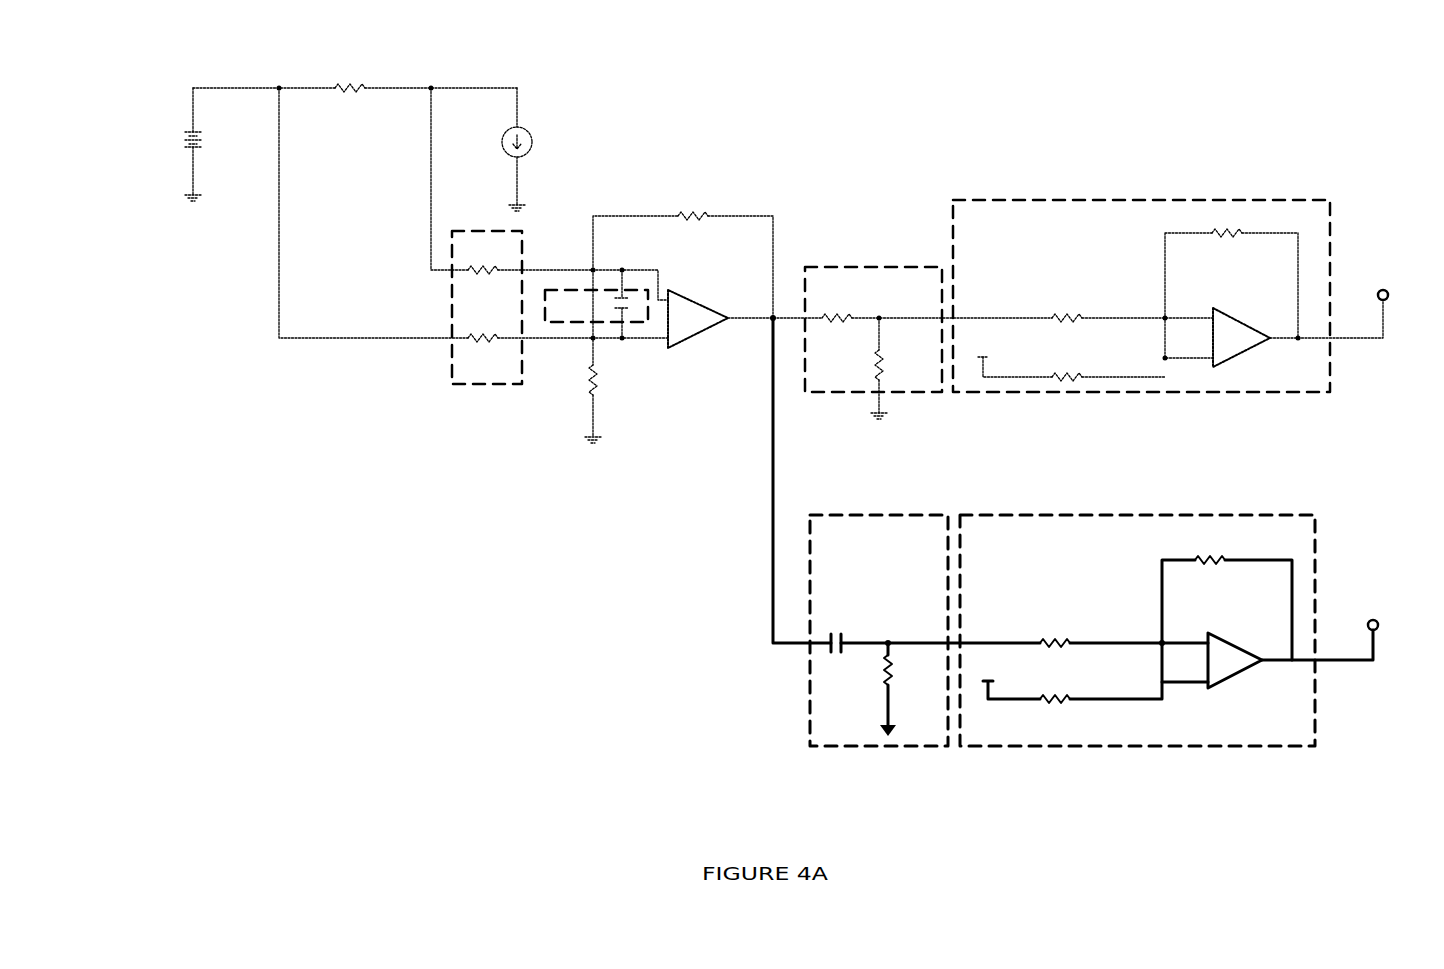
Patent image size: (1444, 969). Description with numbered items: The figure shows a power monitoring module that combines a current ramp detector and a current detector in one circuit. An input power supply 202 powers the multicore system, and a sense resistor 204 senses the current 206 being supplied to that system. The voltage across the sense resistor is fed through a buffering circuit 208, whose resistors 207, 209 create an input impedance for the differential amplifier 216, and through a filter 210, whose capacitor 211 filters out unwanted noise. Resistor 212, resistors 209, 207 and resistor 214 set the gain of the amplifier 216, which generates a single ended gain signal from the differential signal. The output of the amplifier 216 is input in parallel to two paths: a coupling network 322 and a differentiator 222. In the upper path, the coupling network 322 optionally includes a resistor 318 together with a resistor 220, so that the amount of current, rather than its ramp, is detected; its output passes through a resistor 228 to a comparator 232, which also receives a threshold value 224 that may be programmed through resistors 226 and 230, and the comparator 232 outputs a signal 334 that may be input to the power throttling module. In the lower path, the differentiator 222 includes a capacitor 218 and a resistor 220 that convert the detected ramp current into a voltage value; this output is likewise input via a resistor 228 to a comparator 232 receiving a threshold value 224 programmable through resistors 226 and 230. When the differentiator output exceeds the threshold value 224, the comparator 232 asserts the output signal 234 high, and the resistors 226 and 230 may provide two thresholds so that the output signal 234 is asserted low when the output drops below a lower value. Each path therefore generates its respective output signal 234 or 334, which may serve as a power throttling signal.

The input power supply 202 is at (157, 145).
The sense resistor 204 is at (355, 52).
The current 206 is at (559, 145).
The resistor 207 is at (483, 322).
The buffering circuit 208 is at (462, 373).
The resistor 209 is at (486, 256).
The filter 210 is at (587, 315).
The capacitor 211 is at (597, 305).
The resistor 212 is at (700, 184).
The resistor 214 is at (639, 388).
The amplifier 216 is at (711, 291).
The capacitor 218 is at (838, 628).
The resistor 220 is at (903, 517).
The differentiator 222 is at (855, 747).
The threshold value 224 is at (986, 504).
The resistor 226 is at (1061, 523).
The resistor 228 is at (1061, 463).
The resistor 230 is at (1220, 385).
The comparator 232 is at (1244, 490).
The output signal 234 is at (1377, 581).
The resistor 318 is at (837, 302).
The coupling network 322 is at (925, 388).
The output signal 334 is at (1390, 253).